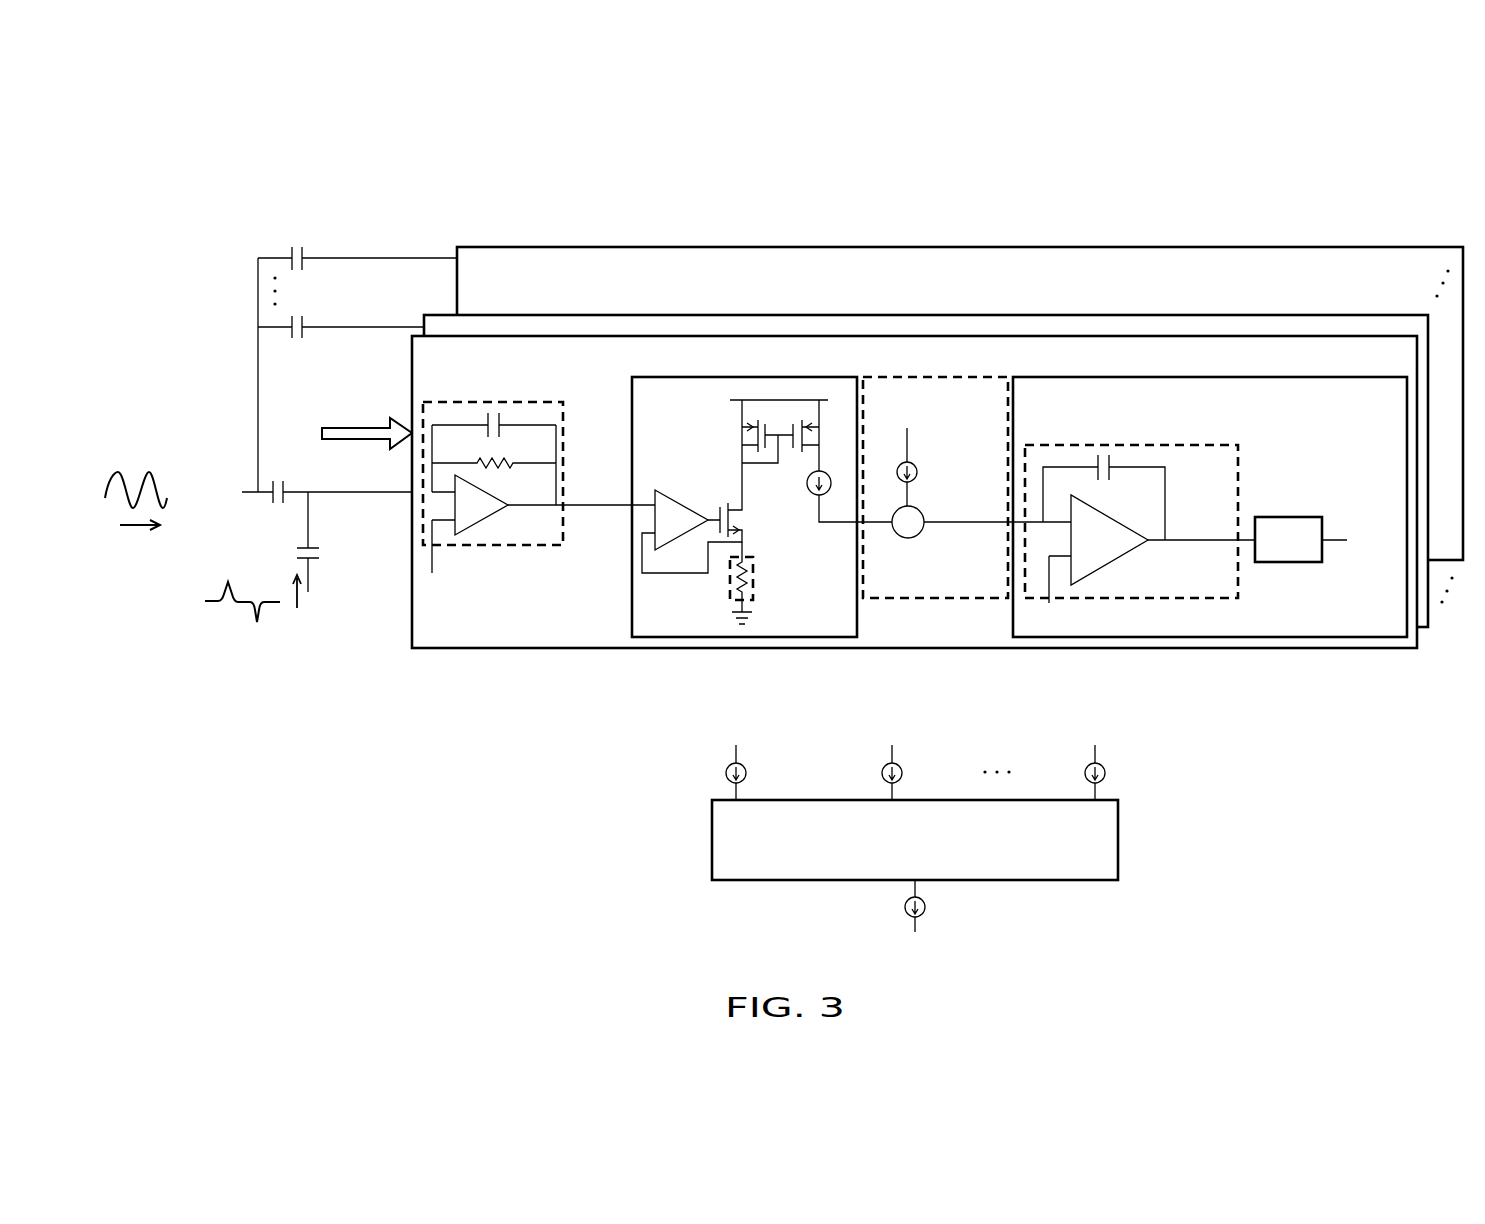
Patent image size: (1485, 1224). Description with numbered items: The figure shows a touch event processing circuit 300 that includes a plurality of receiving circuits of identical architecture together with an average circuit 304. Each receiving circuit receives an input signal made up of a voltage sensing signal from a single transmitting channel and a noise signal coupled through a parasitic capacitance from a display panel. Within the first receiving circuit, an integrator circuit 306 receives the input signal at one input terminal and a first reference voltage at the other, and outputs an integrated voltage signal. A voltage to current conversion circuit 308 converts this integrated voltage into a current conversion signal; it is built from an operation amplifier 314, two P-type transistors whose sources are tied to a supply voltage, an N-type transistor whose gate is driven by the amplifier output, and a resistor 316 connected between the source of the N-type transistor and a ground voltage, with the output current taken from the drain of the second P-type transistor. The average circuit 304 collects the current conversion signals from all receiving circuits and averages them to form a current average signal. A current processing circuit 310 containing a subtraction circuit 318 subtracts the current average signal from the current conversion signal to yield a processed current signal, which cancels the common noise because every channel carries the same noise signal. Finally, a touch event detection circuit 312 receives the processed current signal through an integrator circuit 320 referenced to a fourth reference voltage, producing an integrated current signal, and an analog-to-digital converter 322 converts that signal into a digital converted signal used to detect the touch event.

The touch event processing circuit 300 is at (1116, 190).
The average circuit 304 is at (1118, 840).
The integrator circuit 306 is at (528, 402).
The voltage to current conversion circuit 308 is at (743, 377).
The current processing circuit 310 is at (935, 376).
The touch event detection circuit 312 is at (1210, 377).
The operation amplifier 314 is at (683, 497).
The resistor 316 is at (753, 574).
The subtraction circuit 318 is at (908, 538).
The integrator circuit 320 is at (1238, 476).
The ADC 322 is at (1290, 563).